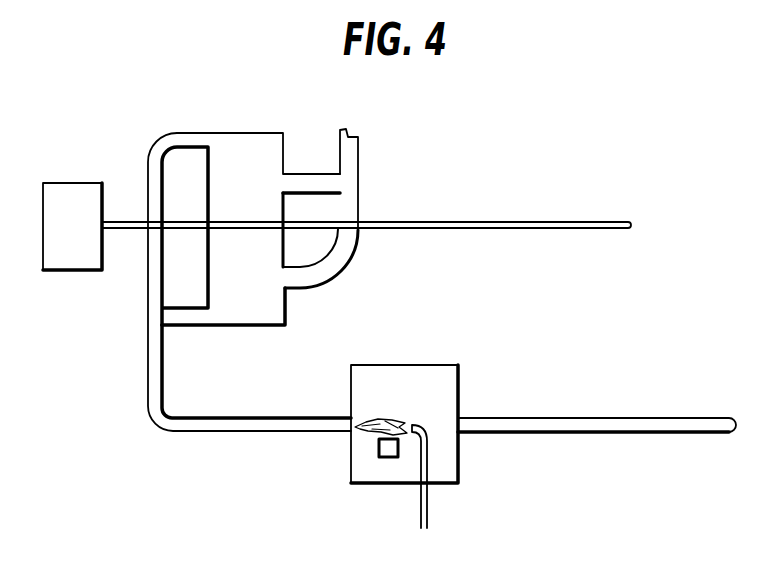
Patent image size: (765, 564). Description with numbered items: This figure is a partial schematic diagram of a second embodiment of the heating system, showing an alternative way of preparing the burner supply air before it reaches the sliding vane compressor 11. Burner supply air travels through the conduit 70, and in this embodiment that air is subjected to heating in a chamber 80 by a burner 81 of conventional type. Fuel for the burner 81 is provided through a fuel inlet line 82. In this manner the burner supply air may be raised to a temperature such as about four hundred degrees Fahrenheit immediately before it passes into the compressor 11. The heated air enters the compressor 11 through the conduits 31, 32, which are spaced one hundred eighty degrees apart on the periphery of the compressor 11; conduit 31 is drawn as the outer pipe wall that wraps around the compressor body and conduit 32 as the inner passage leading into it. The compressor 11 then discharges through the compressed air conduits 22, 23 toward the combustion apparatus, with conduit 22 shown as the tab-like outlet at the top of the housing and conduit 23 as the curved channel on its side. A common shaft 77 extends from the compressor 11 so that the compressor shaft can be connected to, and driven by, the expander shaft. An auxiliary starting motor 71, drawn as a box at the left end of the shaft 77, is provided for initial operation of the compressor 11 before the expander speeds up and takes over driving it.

The sliding vane compressor 11 is at (236, 124).
The compressed air conduit 22 is at (297, 178).
The compressed air conduit 23 is at (315, 270).
The conduit 31 is at (163, 148).
The conduit 32 is at (178, 315).
The conduit 70 is at (595, 420).
The auxiliary starting motor 71 is at (70, 195).
The common shaft 77 is at (548, 228).
The chamber 80 is at (466, 472).
The burner 81 is at (378, 457).
The fuel inlet line 82 is at (420, 518).